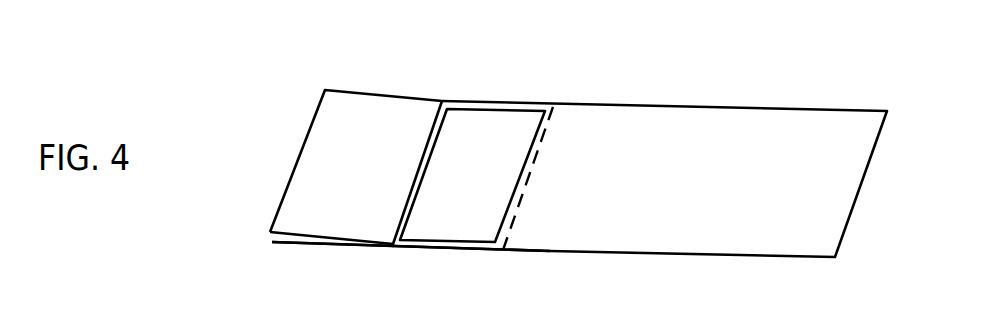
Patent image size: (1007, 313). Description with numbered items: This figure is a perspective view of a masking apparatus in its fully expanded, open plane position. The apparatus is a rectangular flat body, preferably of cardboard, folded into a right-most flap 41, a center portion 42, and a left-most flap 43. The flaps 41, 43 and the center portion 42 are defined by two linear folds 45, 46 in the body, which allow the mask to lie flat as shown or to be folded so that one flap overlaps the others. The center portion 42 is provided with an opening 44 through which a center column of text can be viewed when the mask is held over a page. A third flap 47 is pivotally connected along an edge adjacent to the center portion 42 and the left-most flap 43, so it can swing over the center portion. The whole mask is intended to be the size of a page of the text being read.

The right-most flap 41 is at (675, 123).
The center portion 42 is at (470, 248).
The left-most flap 43 is at (307, 245).
The opening 44 is at (500, 107).
The fold 45 is at (555, 105).
The fold 46 is at (442, 102).
The third flap 47 is at (382, 92).